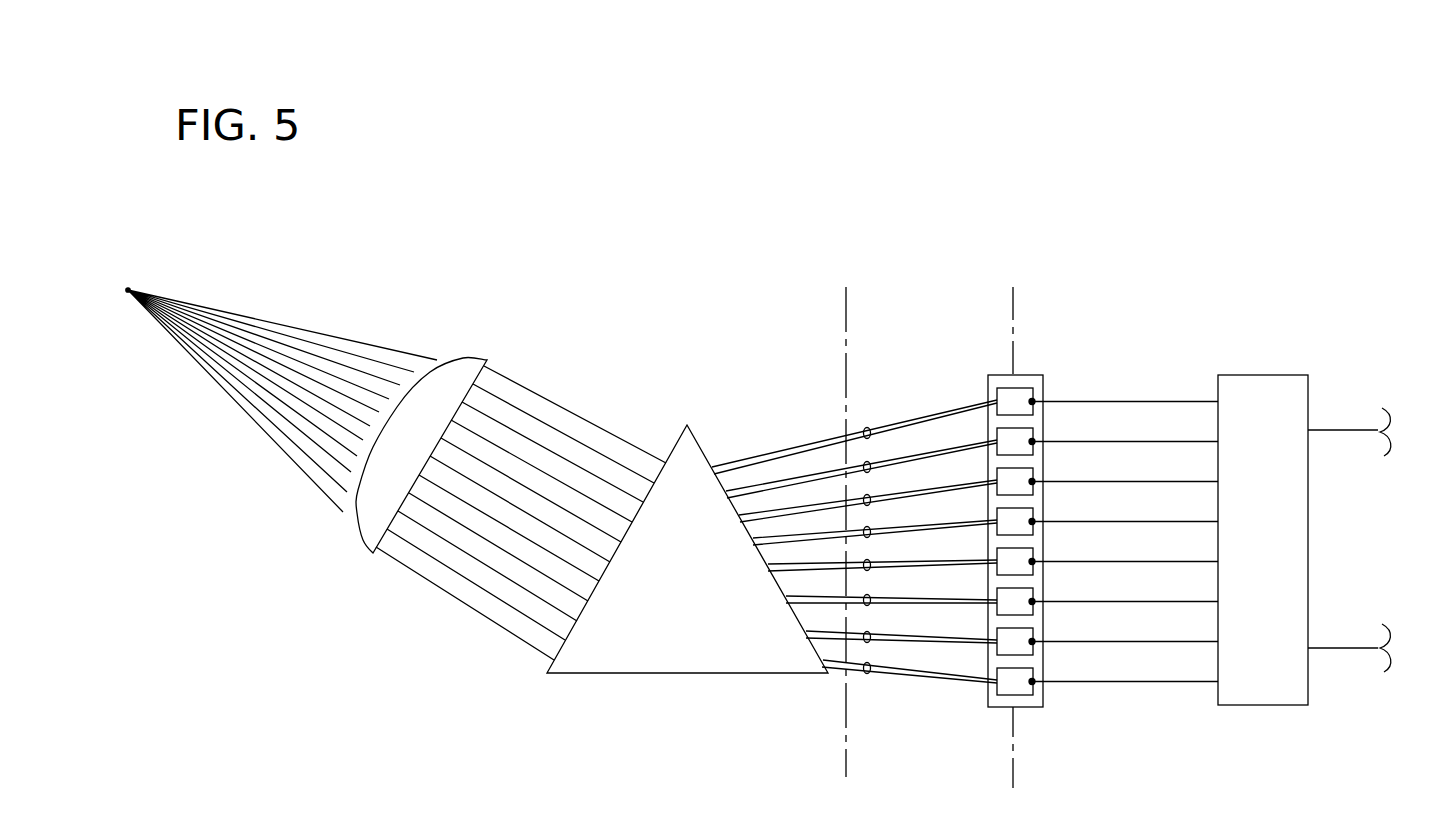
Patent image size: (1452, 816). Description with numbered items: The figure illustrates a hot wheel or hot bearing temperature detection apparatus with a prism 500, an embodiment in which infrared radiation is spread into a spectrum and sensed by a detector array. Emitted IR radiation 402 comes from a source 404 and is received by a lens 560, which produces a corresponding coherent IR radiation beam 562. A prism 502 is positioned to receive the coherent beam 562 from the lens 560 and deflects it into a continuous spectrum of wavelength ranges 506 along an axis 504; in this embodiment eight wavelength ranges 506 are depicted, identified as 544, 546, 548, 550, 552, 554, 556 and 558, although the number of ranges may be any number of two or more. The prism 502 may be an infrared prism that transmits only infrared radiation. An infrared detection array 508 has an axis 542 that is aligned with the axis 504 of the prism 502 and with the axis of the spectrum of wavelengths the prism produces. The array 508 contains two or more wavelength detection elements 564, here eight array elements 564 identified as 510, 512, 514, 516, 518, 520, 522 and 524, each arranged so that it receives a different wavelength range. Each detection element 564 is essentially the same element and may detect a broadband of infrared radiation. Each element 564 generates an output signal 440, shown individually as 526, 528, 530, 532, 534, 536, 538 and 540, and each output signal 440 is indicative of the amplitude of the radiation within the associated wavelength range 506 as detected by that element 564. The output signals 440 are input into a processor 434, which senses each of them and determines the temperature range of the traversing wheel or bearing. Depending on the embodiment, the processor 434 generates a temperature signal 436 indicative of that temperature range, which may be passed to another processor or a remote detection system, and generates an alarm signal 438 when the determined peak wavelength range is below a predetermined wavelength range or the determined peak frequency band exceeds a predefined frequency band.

The hot wheel or hot bearing temperature detection apparatus with a prism 500 is at (826, 204).
The source 404 is at (128, 289).
The emitted IR radiation 402 is at (269, 448).
The lens 560 is at (372, 552).
The coherent IR radiation beam 562 is at (426, 584).
The prism 502 is at (641, 675).
The axis 504 is at (846, 388).
The wavelength ranges 506 is at (862, 685).
The axis of the array 542 is at (1013, 330).
The wavelength range 544 is at (867, 427).
The wavelength range 546 is at (867, 461).
The wavelength range 548 is at (867, 494).
The wavelength range 550 is at (867, 526).
The wavelength range 552 is at (867, 559).
The wavelength range 554 is at (867, 594).
The wavelength range 556 is at (867, 631).
The wavelength range 558 is at (868, 675).
The infrared detection array 508 is at (1031, 710).
The wavelength detection elements 564 is at (1003, 710).
The array element 510 is at (1036, 391).
The array element 512 is at (1036, 431).
The array element 514 is at (1036, 470).
The array element 516 is at (1036, 511).
The array element 518 is at (1036, 551).
The array element 520 is at (1036, 591).
The array element 522 is at (1036, 633).
The array element 524 is at (1036, 671).
The output signal 526 is at (1194, 401).
The output signal 528 is at (1194, 441).
The output signal 530 is at (1194, 481).
The output signal 532 is at (1194, 521).
The output signal 534 is at (1194, 561).
The output signal 536 is at (1194, 601).
The output signal 538 is at (1194, 641).
The output signal 540 is at (1194, 681).
The output signal 440 is at (1139, 693).
The processor 434 is at (1273, 708).
The temperature signal 436 is at (1371, 432).
The alarm signal 438 is at (1371, 648).